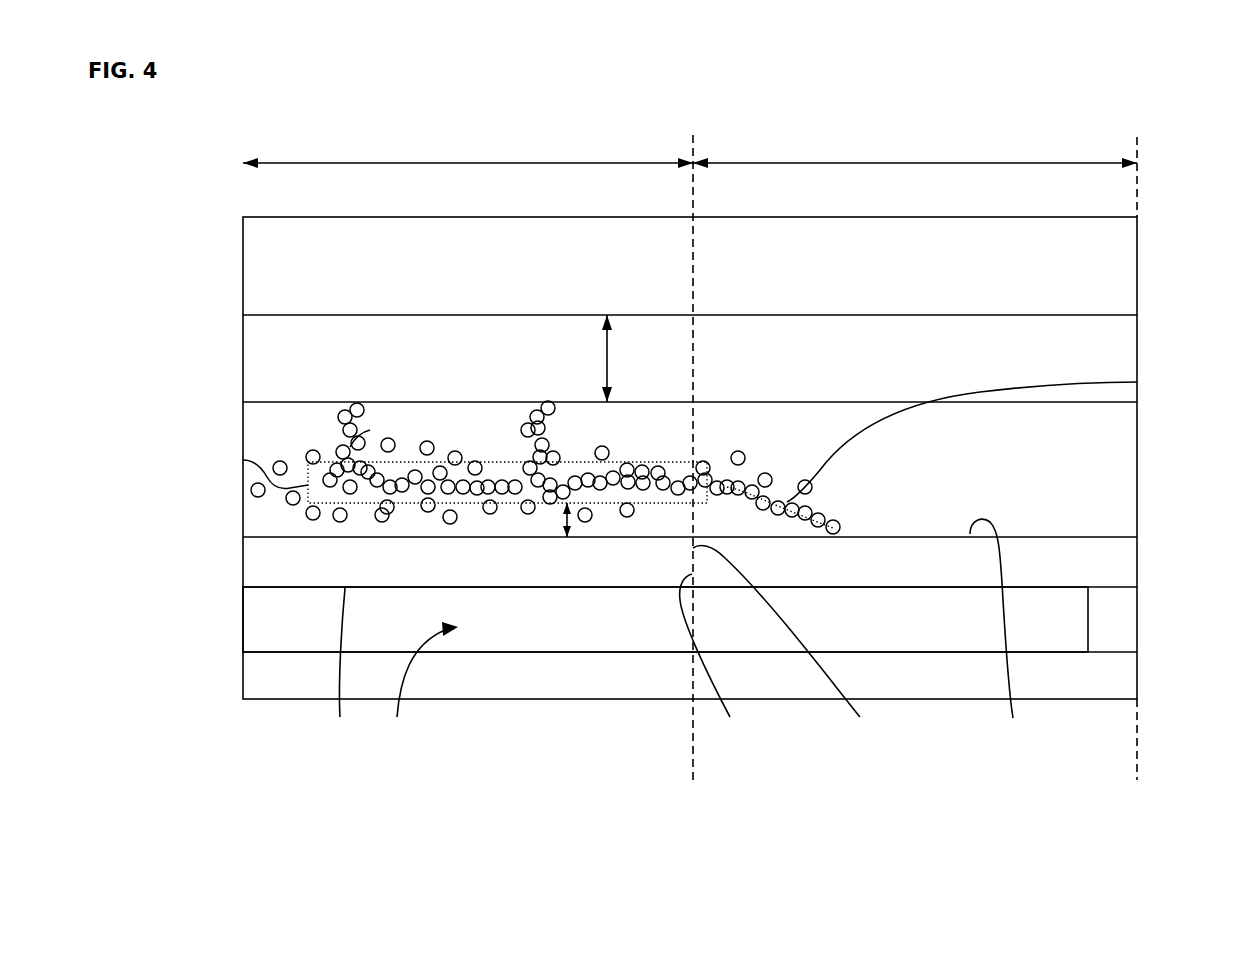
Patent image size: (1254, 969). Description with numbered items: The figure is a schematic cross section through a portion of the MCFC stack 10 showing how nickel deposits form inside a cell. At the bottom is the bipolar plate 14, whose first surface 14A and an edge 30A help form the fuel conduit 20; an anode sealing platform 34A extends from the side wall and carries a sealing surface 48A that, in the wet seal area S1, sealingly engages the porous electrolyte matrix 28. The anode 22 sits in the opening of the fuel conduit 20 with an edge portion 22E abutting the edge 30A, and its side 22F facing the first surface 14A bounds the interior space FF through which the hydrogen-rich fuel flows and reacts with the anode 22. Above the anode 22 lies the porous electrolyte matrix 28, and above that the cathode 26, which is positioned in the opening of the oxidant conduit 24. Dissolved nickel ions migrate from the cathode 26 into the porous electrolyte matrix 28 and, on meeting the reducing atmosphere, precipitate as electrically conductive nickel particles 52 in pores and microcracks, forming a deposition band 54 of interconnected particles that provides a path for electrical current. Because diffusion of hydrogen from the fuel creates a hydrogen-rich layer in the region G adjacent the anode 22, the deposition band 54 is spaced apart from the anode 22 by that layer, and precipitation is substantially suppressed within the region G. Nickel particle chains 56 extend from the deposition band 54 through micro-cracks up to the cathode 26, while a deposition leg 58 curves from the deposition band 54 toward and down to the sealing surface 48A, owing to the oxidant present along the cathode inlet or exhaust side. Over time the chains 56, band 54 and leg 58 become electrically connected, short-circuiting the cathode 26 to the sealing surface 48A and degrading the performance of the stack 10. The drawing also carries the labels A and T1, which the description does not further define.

The MCFC stack 10 is at (1036, 88).
The oxidant conduit 24 is at (1166, 249).
The cathode 26 is at (1080, 362).
The deposition leg 58 is at (1137, 382).
The porous electrolyte matrix 28 is at (1067, 432).
The anode sealing platform 34A is at (890, 540).
The fuel conduit 20 is at (1160, 599).
The anode 22 is at (268, 563).
The first surface 14A is at (268, 648).
The bipolar plate 14 is at (287, 678).
The side of the anode 22F is at (341, 673).
The edge of the bipolar plate 30A is at (727, 666).
The edge portion of the anode 22E is at (786, 651).
The sealing surface 48A is at (1011, 638).
The nickel particle chains 56 is at (525, 435).
The nickel particles 52 is at (350, 452).
The deposition band 54 is at (243, 460).
The region A is at (356, 163).
The wet seal area S1 is at (813, 163).
The thickness T1 is at (607, 362).
The region G is at (560, 513).
The interior space FF is at (420, 693).